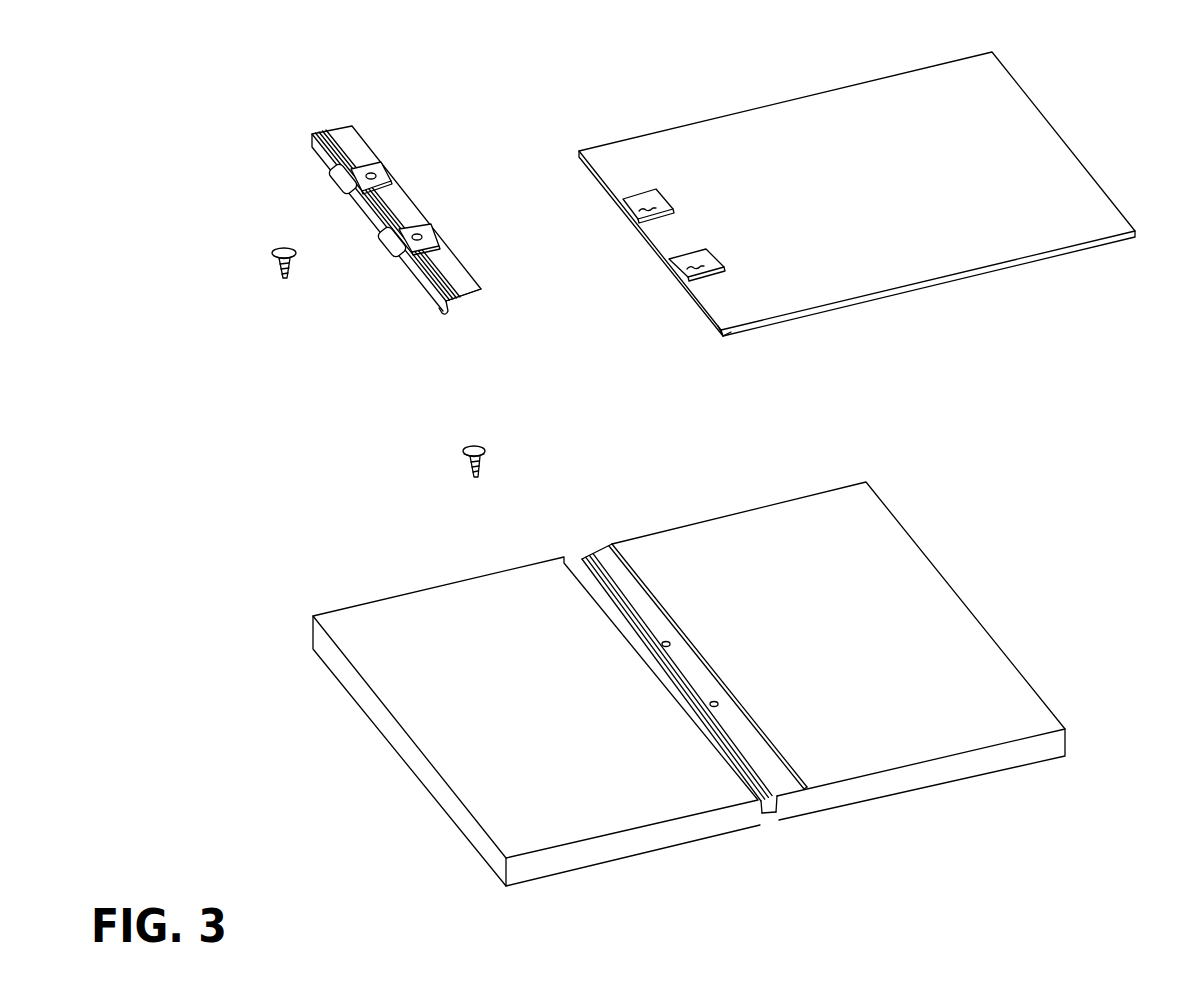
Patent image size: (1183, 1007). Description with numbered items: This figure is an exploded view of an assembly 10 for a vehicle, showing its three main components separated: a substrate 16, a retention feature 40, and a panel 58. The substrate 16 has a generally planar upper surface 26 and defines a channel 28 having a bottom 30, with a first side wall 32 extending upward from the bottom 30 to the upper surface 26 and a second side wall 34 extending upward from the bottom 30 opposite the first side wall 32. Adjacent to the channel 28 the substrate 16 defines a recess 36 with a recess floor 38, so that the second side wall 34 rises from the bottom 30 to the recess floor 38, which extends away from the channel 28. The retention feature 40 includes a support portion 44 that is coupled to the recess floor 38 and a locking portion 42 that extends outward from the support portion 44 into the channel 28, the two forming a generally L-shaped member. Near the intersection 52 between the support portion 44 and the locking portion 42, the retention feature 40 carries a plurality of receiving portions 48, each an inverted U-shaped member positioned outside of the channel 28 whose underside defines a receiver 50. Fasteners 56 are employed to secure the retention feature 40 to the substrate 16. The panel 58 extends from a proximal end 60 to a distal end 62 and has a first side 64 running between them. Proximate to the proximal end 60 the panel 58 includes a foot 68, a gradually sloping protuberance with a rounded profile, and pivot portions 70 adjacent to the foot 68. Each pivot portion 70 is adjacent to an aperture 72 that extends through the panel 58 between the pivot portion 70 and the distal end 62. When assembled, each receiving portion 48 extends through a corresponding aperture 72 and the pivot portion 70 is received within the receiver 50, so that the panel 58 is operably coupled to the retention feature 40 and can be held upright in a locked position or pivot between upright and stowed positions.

The assembly 10 is at (226, 75).
The substrate 16 is at (913, 632).
The upper surface 26 is at (960, 660).
The channel 28 is at (624, 610).
The bottom 30 is at (768, 815).
The first side wall 32 is at (760, 803).
The second side wall 34 is at (778, 805).
The recess 36 is at (698, 666).
The recess floor 38 is at (746, 737).
The retention feature 40 is at (336, 129).
The locking portion 42 is at (442, 313).
The support portion 44 is at (447, 275).
The receiving portion 48 is at (337, 172).
The receiver 50 is at (355, 195).
The intersection 52 is at (345, 156).
The fasteners 56 is at (274, 265).
The panel 58 is at (845, 149).
The proximal end 60 is at (690, 310).
The distal end 62 is at (1094, 181).
The first side 64 is at (1001, 140).
The foot 68 is at (721, 336).
The pivot portion 70 is at (633, 214).
The aperture 72 is at (645, 207).